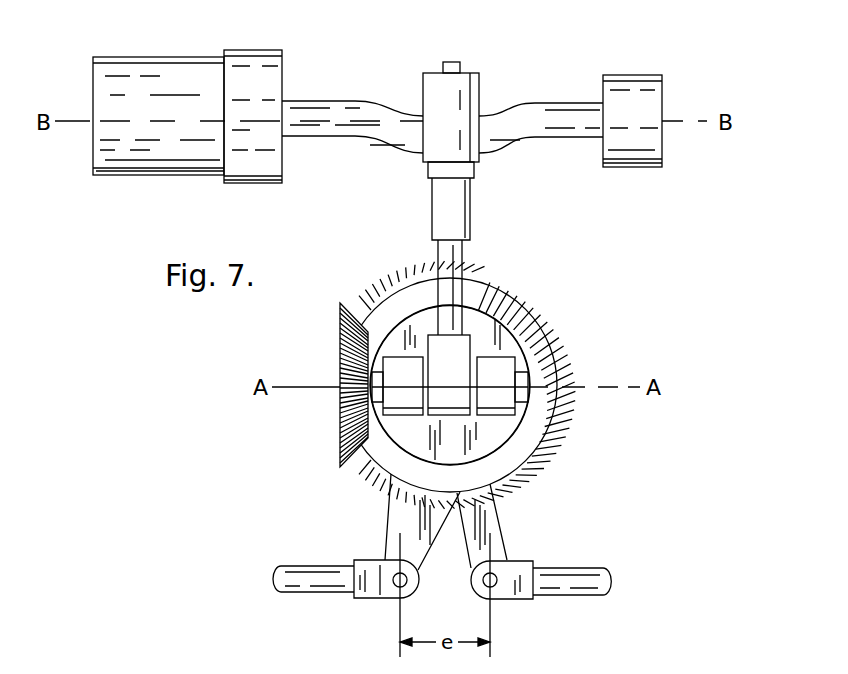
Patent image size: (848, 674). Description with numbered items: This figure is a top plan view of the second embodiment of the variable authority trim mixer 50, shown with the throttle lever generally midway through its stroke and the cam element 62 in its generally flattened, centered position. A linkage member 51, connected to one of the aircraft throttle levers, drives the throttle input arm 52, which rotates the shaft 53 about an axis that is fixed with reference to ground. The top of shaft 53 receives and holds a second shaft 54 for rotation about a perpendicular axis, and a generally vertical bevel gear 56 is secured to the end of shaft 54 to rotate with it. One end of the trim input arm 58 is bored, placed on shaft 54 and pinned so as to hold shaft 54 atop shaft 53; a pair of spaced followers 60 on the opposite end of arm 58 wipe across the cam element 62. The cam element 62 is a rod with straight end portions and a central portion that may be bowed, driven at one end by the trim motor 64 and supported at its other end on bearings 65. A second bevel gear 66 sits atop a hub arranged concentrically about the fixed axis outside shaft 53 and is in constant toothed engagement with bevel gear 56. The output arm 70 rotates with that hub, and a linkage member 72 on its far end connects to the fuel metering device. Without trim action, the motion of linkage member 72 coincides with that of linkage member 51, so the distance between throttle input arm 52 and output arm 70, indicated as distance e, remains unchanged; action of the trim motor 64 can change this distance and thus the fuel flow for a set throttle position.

The variable authority trim mixer 50 is at (290, 427).
The linkage member 51 is at (607, 568).
The throttle input arm 52 is at (497, 546).
The shaft 53 is at (485, 385).
The shaft 54 is at (548, 351).
The bevel gear 56 is at (340, 340).
The trim input arm 58 is at (462, 253).
The followers 60 is at (480, 73).
The cam element 62 is at (366, 110).
The trim motor 64 is at (165, 70).
The bearings 65 is at (662, 76).
The second bevel gear 66 is at (521, 304).
The output arm 70 is at (405, 522).
The linkage member 72 is at (285, 573).